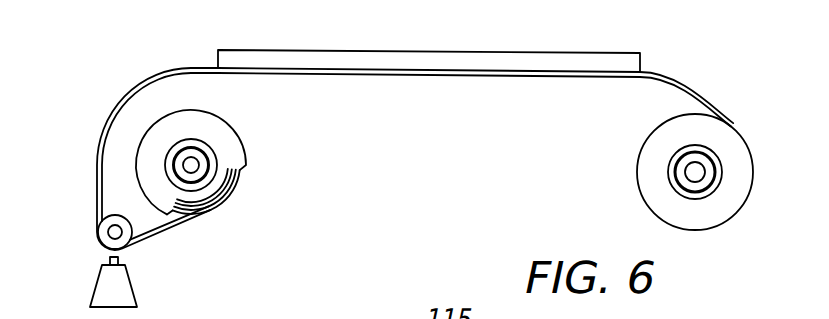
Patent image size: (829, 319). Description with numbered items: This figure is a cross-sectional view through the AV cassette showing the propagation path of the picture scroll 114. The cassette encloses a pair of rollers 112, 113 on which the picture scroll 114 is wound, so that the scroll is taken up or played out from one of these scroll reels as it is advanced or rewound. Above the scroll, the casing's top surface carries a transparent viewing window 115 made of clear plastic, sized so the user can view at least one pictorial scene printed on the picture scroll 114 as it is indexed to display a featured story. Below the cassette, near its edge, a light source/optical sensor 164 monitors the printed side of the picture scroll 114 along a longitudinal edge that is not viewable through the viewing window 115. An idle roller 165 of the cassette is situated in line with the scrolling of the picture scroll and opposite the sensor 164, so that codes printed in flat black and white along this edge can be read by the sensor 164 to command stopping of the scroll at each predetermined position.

The transparent viewing window 115 is at (252, 58).
The roller 112 is at (223, 142).
The picture scroll 114 is at (228, 201).
The roller 113 is at (680, 177).
The idle roller 165 is at (108, 230).
The light source/optical sensor 164 is at (117, 283).